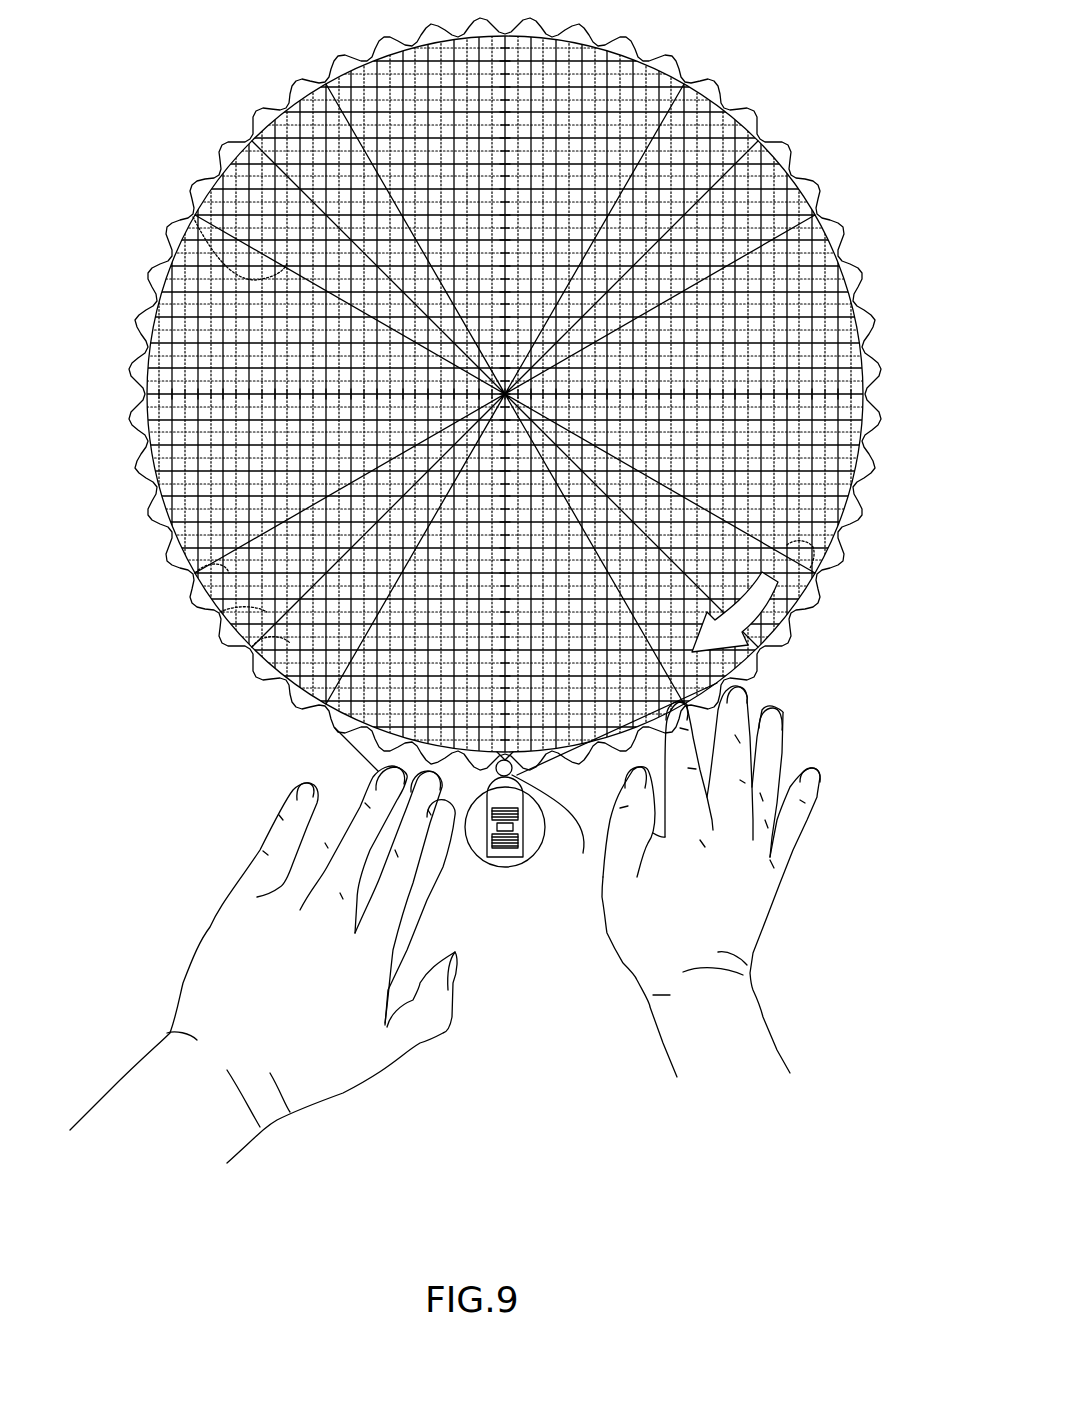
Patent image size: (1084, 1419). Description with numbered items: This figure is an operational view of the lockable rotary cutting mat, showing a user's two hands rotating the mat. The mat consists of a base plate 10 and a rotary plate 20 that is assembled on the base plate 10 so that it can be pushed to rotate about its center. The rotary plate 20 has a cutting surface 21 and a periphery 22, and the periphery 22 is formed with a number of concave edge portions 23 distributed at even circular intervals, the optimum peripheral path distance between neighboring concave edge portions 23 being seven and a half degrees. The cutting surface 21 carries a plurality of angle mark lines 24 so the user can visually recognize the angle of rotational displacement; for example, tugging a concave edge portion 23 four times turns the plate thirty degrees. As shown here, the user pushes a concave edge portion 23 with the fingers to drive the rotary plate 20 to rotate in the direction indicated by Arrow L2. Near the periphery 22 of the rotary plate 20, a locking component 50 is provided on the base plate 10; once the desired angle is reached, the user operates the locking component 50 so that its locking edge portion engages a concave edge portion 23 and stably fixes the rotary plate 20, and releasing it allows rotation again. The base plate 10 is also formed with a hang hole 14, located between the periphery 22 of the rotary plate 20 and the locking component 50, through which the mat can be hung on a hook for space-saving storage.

The base plate 10 is at (597, 787).
The hang hole 14 is at (559, 831).
The rotary plate 20 is at (793, 107).
The cutting surface 21 is at (170, 242).
The periphery 22 is at (257, 680).
The concave edge portion 23 is at (217, 173).
The angle mark lines 24 is at (800, 546).
The locking component 50 is at (530, 868).
The Arrow L2 is at (768, 635).